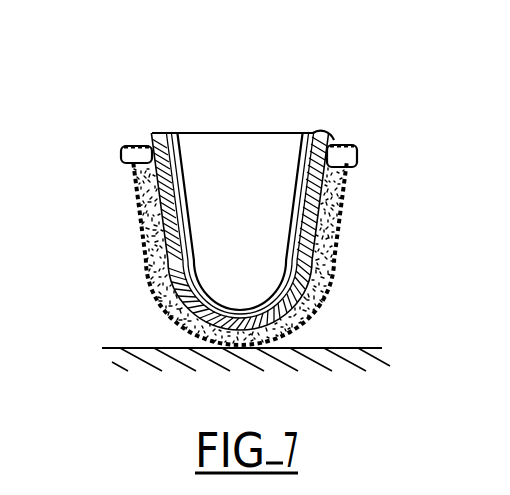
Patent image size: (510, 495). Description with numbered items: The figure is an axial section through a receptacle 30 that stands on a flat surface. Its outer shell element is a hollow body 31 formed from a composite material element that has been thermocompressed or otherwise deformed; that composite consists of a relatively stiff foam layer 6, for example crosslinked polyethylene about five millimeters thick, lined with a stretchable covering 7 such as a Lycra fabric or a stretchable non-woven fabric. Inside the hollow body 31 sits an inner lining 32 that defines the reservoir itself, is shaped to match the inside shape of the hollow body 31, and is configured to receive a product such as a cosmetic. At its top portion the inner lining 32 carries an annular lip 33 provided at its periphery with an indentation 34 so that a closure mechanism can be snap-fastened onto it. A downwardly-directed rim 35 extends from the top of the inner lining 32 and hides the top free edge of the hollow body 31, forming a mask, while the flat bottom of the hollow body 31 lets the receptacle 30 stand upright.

The receptacle 30 is at (112, 127).
The hollow body 31 is at (150, 263).
The foam layer 6 is at (155, 177).
The stretchable covering 7 is at (140, 208).
The inner lining 32 is at (303, 220).
The annular lip 33 is at (312, 133).
The indentation 34 is at (330, 137).
The downwardly-directed rim 35 is at (362, 158).